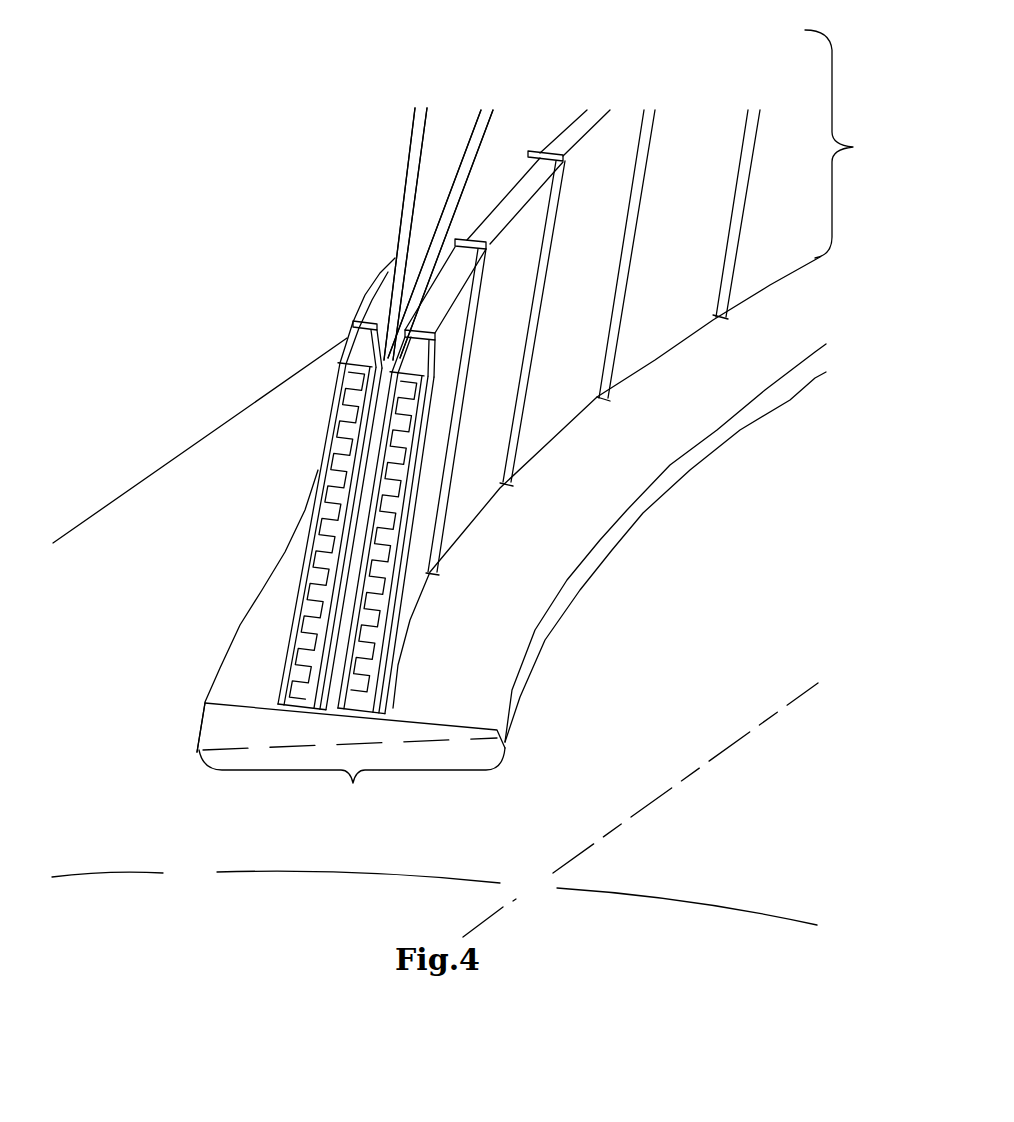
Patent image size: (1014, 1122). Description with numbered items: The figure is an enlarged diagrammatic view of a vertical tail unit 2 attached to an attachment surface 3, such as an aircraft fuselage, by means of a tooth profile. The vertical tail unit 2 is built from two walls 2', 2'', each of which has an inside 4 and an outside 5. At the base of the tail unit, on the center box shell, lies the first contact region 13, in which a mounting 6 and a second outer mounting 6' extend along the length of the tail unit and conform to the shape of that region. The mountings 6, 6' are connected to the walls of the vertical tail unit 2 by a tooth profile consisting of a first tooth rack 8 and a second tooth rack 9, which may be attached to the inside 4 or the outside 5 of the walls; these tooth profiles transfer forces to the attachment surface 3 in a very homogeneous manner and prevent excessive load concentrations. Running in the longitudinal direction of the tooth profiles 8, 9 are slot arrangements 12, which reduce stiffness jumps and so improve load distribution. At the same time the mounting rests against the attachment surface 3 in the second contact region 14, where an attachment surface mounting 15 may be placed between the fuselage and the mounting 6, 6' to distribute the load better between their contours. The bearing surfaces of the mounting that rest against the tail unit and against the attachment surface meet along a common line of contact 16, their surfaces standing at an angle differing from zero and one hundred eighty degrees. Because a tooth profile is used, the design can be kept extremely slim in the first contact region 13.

The vertical tail unit 2 is at (337, 226).
The wall of the vertical tail unit 2' is at (344, 234).
The wall of the vertical tail unit 2'' is at (514, 200).
The attachment surface 3 is at (192, 475).
The inside 4 is at (410, 233).
The outside 5 is at (493, 143).
The mounting 6 is at (654, 626).
The second outer mounting 6' is at (203, 802).
The first tooth rack 8 is at (663, 290).
The second tooth rack 9 is at (307, 588).
The slot arrangements 12 is at (608, 342).
The first contact region 13 is at (804, 174).
The second contact region 14 is at (352, 794).
The attachment surface mounting 15 is at (207, 718).
The common line of contact 16 is at (767, 290).